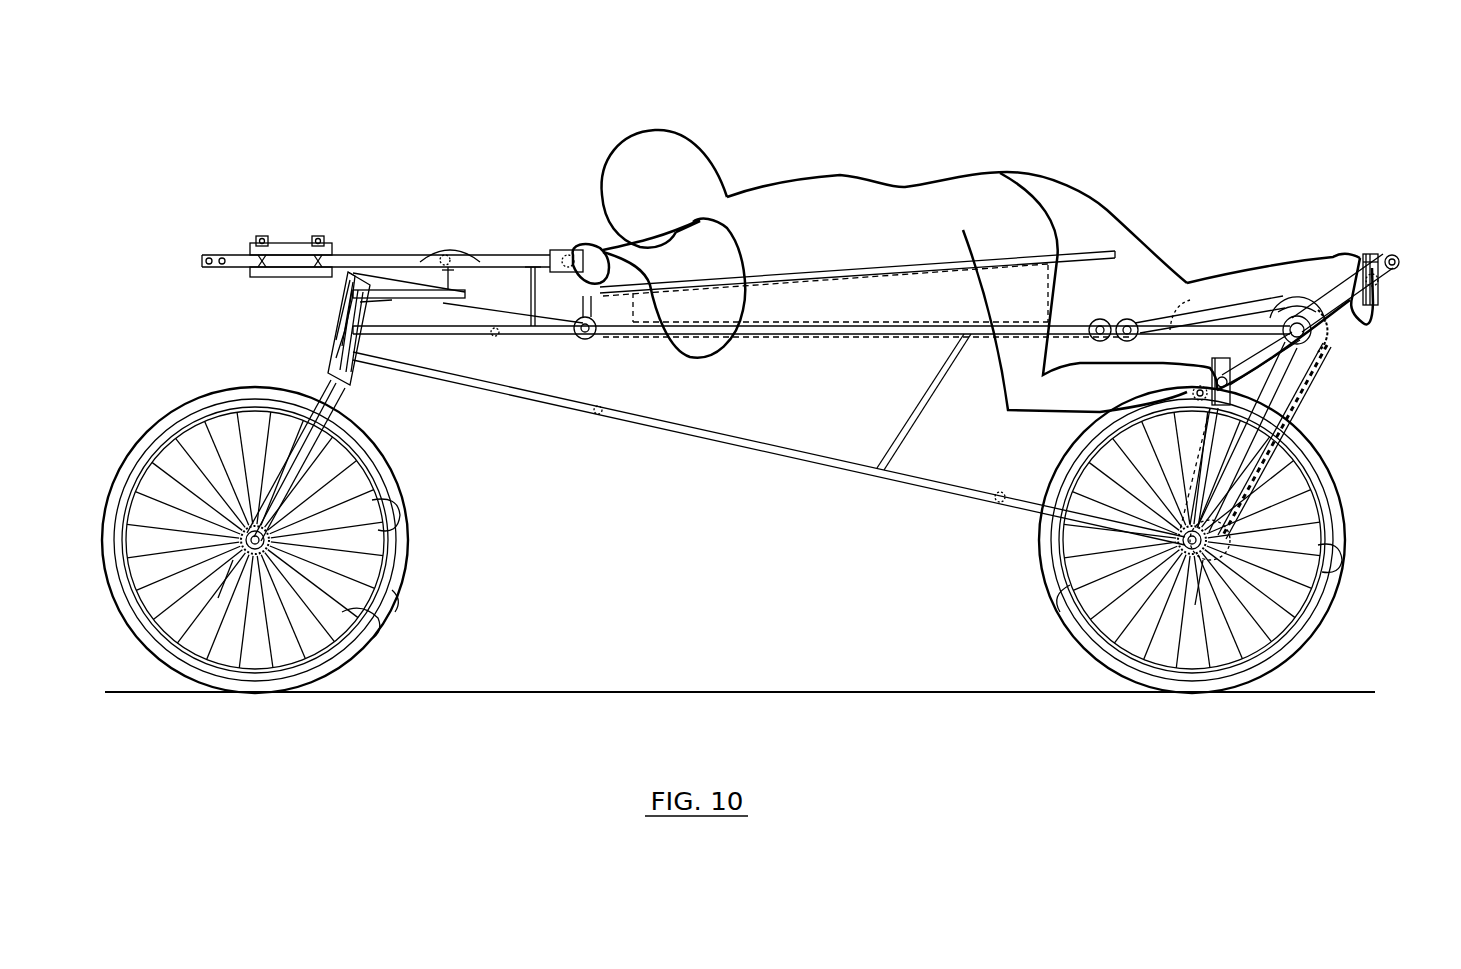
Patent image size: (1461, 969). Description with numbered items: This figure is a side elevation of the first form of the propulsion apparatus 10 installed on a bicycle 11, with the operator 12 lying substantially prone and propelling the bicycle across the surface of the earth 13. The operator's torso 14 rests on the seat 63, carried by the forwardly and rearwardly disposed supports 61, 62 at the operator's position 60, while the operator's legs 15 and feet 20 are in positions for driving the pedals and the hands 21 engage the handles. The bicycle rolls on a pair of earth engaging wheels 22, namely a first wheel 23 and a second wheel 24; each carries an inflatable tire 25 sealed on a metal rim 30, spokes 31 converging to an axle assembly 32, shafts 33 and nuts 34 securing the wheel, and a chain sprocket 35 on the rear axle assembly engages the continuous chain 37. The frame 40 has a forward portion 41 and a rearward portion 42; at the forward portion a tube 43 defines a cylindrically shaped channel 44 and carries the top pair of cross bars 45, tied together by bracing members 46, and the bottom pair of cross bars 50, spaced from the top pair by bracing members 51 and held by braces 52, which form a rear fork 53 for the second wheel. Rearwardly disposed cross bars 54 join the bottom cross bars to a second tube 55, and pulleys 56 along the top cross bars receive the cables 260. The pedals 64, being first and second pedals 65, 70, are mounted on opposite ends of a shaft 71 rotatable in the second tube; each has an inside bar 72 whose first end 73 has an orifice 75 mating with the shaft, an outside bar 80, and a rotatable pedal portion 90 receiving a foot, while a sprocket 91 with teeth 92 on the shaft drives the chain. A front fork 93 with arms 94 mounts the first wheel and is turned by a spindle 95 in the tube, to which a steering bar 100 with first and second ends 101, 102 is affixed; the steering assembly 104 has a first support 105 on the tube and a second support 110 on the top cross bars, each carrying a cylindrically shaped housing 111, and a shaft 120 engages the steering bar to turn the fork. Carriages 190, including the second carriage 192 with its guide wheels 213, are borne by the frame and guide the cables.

The propulsion apparatus 10 is at (470, 225).
The bicycle 11 is at (821, 414).
The operator 12 is at (973, 248).
The surface of the earth 13 is at (730, 692).
The operator's torso 14 is at (903, 197).
The operator's legs 15 is at (1020, 243).
The feet 20 is at (1362, 255).
The hands 21 is at (575, 250).
The earth engaging wheels 22 is at (761, 540).
The first wheel 23 is at (395, 600).
The second wheel 24 is at (1330, 598).
The inflatable tire 25 is at (400, 570).
The metal rim 30 is at (385, 530).
The spokes 31 is at (335, 632).
The axle assembly 32 is at (215, 598).
The shafts 33 is at (280, 524).
The nuts 34 is at (240, 535).
The chain sprocket 35 is at (1245, 522).
The continuous chain 37 is at (1290, 395).
The frame 40 is at (717, 447).
The forward portion 41 is at (392, 353).
The rearward portion 42 is at (1283, 371).
The tube 43 is at (370, 334).
The cylindrically shaped channel 44 is at (330, 300).
The top pair of cross bars 45 is at (930, 335).
The bracing members 46 is at (497, 337).
The bottom pair of cross bars 50 is at (808, 457).
The bracing members 51 is at (935, 391).
The braces 52 is at (597, 416).
The rear fork 53 is at (1030, 512).
The rearwardly disposed cross bars 54 is at (1280, 455).
The second tube 55 is at (1310, 345).
The pulleys 56 is at (595, 338).
The operator's position 60 is at (835, 270).
The forwardly disposed support 61 is at (605, 320).
The rearwardly disposed support 62 is at (866, 313).
The seat 63 is at (905, 275).
The pedals 64 is at (1405, 262).
The first pedal 65 is at (1400, 258).
The second pedal 70 is at (1216, 467).
The shaft 71 is at (1305, 360).
The inside bar 72 is at (1337, 300).
The first end 73 is at (1282, 306).
The orifice 75 is at (1317, 333).
The outside bar 80 is at (1385, 280).
The pedal portion 90 is at (1373, 258).
The sprocket 91 is at (1260, 320).
The teeth 92 is at (1285, 372).
The front fork 93 is at (357, 385).
The arms 94 is at (325, 450).
The spindle 95 is at (372, 302).
The steering bar 100 is at (410, 290).
The first end 101 is at (360, 268).
The second end 102 is at (465, 300).
The steering assembly 104 is at (330, 228).
The first support 105 is at (320, 305).
The second support 110 is at (530, 296).
The cylindrically shaped housing 111 is at (535, 267).
The shaft 120 is at (460, 290).
The carriages 190 is at (295, 228).
The second carriage 192 is at (272, 248).
The guide wheels 213 is at (310, 277).
The cables 260 is at (870, 330).